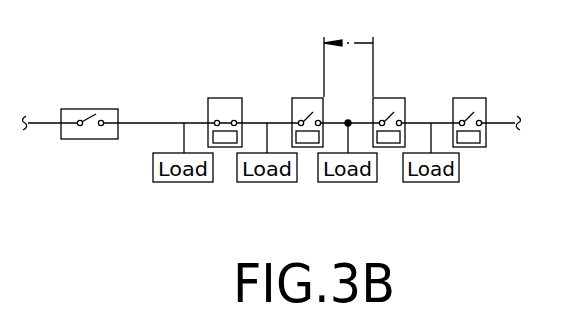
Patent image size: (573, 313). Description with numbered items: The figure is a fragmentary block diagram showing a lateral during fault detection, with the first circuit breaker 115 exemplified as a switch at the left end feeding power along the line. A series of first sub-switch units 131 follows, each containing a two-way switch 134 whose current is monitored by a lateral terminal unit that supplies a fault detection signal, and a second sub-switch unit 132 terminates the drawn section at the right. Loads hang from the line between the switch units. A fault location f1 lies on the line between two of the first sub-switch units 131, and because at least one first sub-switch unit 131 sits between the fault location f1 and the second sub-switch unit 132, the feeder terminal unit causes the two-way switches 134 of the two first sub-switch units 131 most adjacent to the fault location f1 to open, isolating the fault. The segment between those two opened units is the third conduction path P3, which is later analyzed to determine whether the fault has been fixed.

The first circuit breaker 115 is at (88, 108).
The first sub-switch unit 131 is at (304, 98).
The second sub-switch unit 132 is at (471, 98).
The 2-way switch 134 is at (311, 138).
The third conduction path P3 is at (348, 54).
The fault location f1 is at (348, 123).